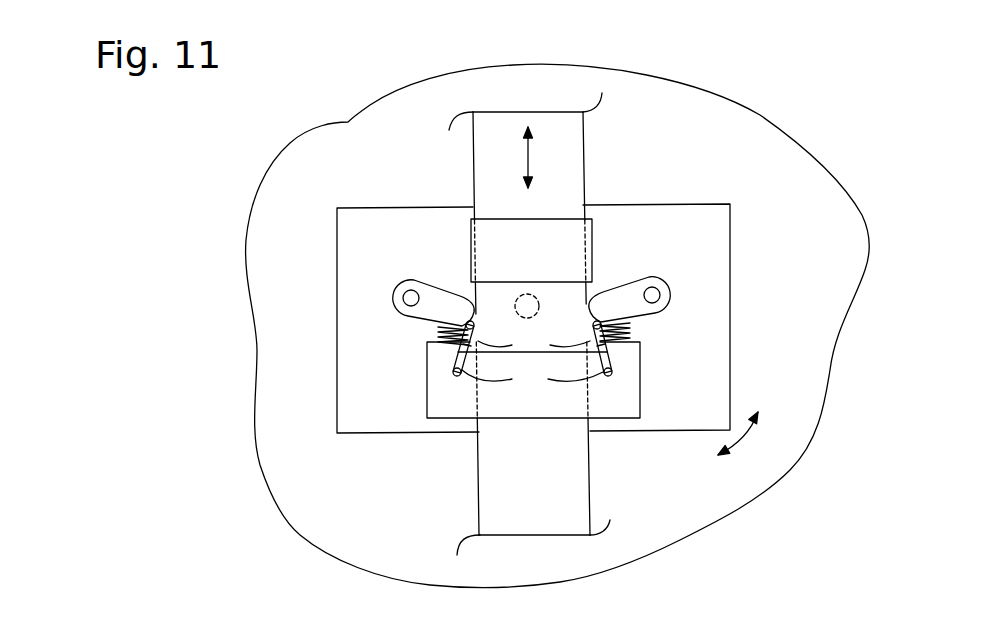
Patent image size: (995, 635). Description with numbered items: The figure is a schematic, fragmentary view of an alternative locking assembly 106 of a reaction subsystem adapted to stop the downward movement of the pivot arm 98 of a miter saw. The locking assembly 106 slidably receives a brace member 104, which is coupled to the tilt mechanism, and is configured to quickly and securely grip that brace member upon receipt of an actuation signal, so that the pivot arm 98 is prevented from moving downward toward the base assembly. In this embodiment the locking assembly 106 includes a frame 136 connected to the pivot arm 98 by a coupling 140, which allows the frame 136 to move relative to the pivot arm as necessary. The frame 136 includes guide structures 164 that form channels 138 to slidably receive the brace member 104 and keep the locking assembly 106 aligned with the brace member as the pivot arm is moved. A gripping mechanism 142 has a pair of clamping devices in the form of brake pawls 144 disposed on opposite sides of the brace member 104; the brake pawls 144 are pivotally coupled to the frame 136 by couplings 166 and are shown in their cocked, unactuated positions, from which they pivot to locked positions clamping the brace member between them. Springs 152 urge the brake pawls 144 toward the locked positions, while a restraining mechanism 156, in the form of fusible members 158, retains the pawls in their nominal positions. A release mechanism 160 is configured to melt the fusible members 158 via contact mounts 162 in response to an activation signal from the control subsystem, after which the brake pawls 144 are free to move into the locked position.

The pivot arm 98 is at (290, 503).
The brace member 104 is at (570, 508).
The locking assembly 106 is at (678, 121).
The frame 136 is at (348, 412).
The channels 138 is at (476, 244).
The coupling 140 is at (537, 296).
The gripping mechanism 142 is at (653, 223).
The brake pawls 144 is at (438, 288).
The springs 152 is at (440, 330).
The restraining mechanism 156 is at (441, 364).
The fusible members 158 is at (532, 339).
The release mechanism 160 is at (451, 399).
The contact mounts 162 is at (532, 379).
The guide structures 164 is at (563, 230).
The couplings 166 is at (405, 291).